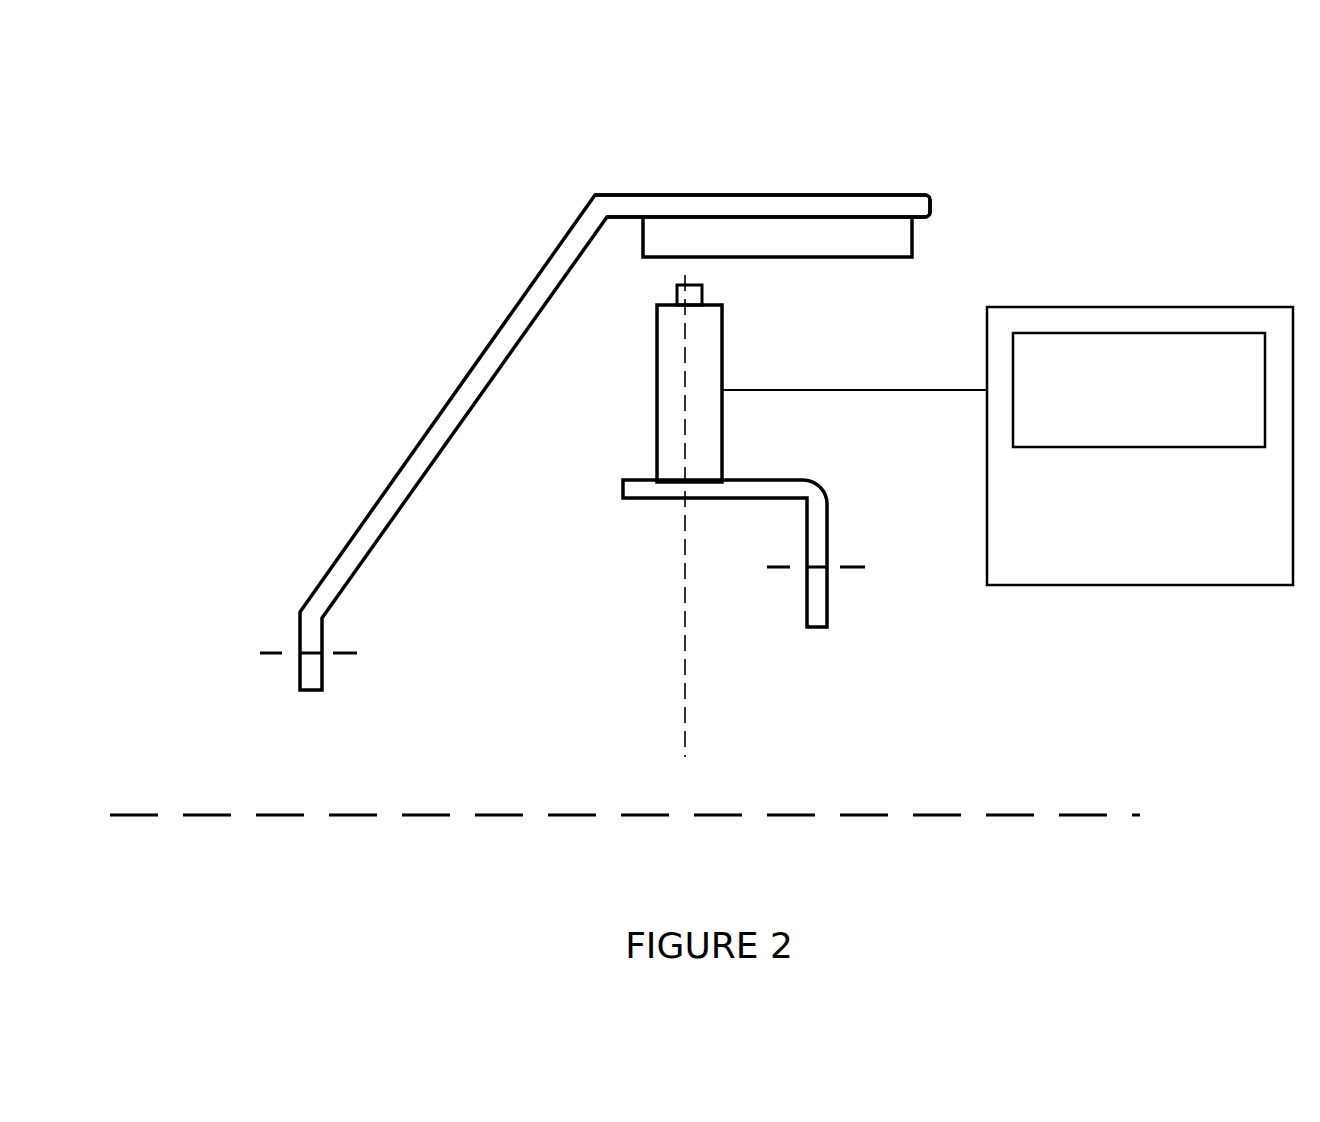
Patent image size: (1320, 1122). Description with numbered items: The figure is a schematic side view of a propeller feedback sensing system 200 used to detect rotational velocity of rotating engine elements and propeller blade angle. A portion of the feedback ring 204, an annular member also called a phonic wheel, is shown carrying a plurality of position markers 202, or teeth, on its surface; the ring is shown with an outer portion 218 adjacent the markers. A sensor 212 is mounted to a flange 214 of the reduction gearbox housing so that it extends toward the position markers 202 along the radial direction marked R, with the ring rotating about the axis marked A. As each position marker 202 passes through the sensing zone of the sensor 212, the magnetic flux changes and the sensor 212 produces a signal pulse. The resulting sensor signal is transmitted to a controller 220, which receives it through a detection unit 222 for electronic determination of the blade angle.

The system 200 is at (340, 163).
The position markers 202 is at (755, 233).
The feedback ring 204 is at (320, 578).
The sensor 212 is at (655, 370).
The flange 214 is at (623, 487).
The mounting plate 218 is at (920, 223).
The controller 220 is at (1113, 571).
The detection unit 222 is at (1113, 426).